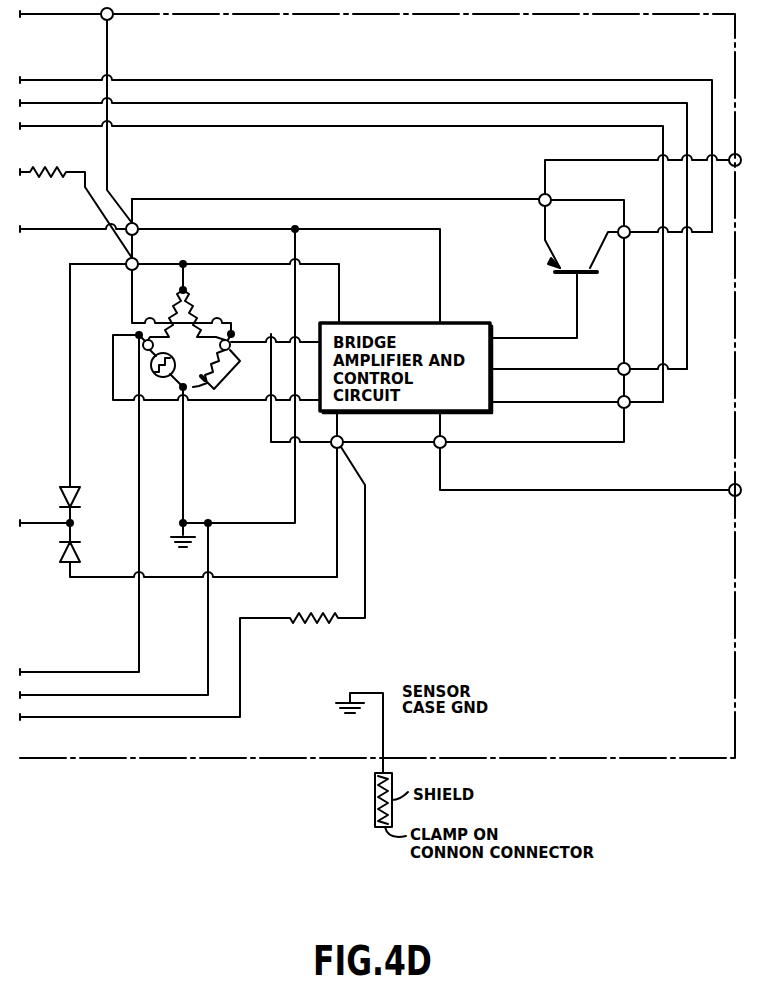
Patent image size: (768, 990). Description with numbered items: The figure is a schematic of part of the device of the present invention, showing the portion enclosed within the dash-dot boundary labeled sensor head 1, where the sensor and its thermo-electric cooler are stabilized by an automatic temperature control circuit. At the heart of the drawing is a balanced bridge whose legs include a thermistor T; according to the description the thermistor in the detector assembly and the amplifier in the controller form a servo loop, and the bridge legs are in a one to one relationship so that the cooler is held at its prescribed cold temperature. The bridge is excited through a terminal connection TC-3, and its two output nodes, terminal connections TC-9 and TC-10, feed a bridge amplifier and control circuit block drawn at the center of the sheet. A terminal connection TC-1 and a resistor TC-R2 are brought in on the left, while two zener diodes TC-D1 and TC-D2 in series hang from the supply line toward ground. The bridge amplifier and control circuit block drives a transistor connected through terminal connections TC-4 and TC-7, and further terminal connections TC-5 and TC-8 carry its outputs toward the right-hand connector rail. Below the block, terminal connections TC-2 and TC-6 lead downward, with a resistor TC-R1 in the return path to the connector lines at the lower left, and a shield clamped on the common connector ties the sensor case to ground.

The sensor head 1 is at (377, 383).
The terminal connection TC-1 is at (230, 261).
The terminal connection TC-2 is at (352, 476).
The terminal connection TC-3 is at (204, 286).
The terminal connection TC-4 is at (436, 211).
The terminal connection TC-5 is at (588, 371).
The terminal connection TC-6 is at (587, 453).
The terminal connection TC-7 is at (601, 281).
The terminal connection TC-8 is at (554, 409).
The terminal connection TC-9 is at (232, 345).
The terminal connection TC-10 is at (143, 345).
The resistor TC-R1 is at (180, 653).
The resistor TC-R2 is at (76, 197).
The zener diode TC-D1 (1N4733) TC-D1 is at (102, 403).
The zener diode TC-D2 (1N4733) TC-D2 is at (178, 543).
The thermistor T is at (169, 393).